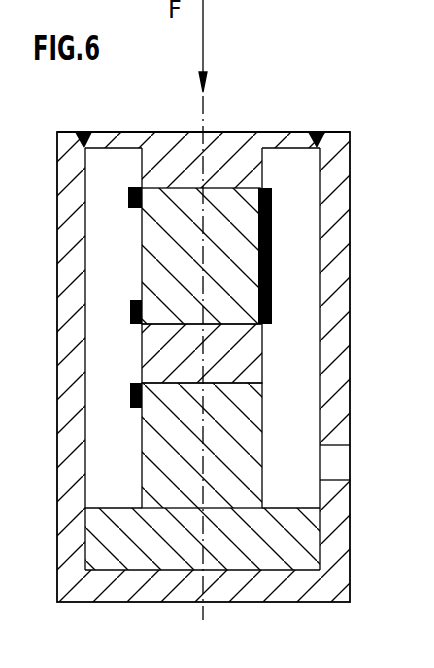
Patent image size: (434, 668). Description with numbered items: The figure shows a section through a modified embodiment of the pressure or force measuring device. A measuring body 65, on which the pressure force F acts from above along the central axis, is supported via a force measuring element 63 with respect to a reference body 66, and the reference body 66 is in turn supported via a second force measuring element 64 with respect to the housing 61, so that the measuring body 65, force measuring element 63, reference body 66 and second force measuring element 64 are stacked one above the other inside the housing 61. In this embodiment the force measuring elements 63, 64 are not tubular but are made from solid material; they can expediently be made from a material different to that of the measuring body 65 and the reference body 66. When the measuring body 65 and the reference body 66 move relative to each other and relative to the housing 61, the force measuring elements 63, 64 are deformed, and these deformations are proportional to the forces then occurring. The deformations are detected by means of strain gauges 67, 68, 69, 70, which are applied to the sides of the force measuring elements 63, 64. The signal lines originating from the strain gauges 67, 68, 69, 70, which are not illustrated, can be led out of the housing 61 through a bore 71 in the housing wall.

The housing 61 is at (334, 273).
The force measuring element 63 is at (162, 261).
The second force measuring element 64 is at (247, 433).
The measuring body 65 is at (257, 143).
The reference body 66 is at (253, 357).
The strain gauge 67 is at (272, 217).
The strain gauge 68 is at (128, 197).
The strain gauge 69 is at (130, 310).
The strain gauge 70 is at (130, 402).
The bore 71 is at (300, 463).